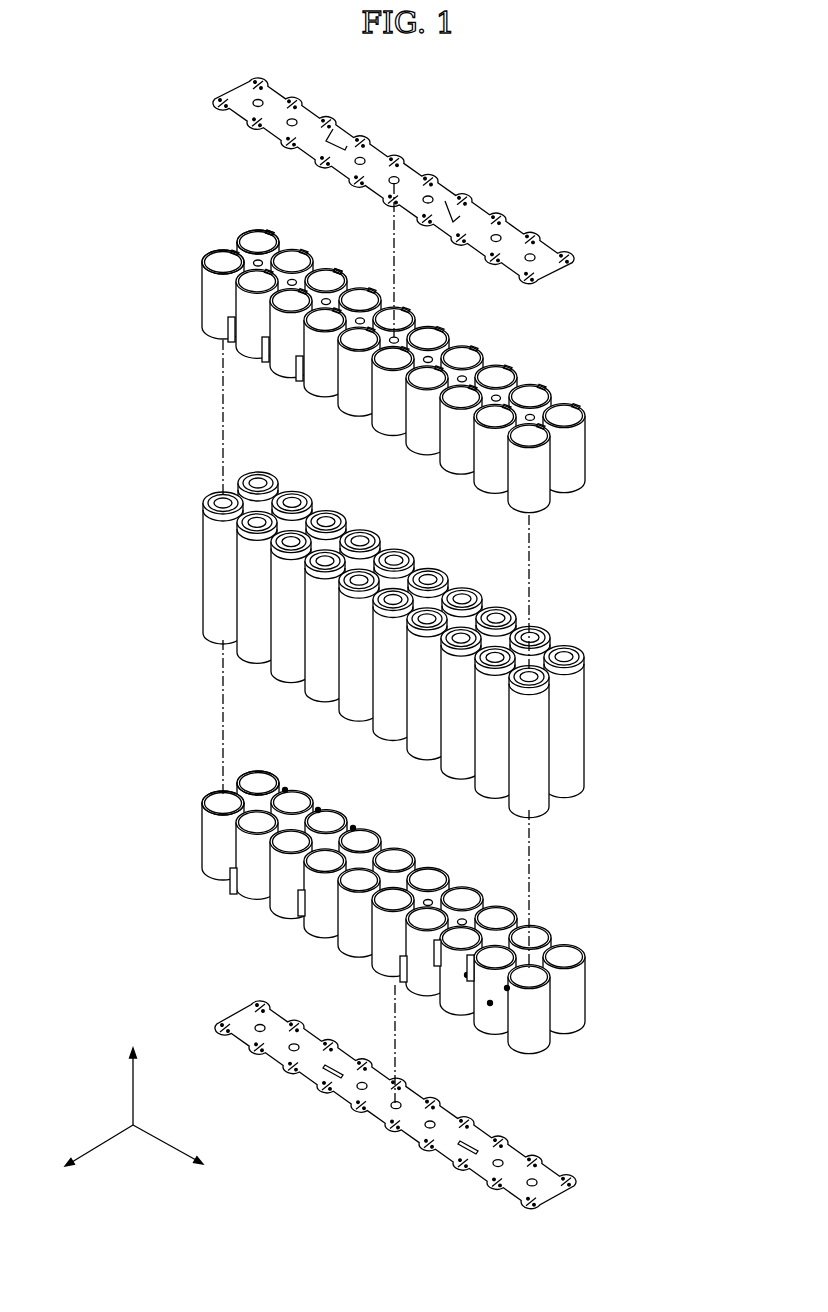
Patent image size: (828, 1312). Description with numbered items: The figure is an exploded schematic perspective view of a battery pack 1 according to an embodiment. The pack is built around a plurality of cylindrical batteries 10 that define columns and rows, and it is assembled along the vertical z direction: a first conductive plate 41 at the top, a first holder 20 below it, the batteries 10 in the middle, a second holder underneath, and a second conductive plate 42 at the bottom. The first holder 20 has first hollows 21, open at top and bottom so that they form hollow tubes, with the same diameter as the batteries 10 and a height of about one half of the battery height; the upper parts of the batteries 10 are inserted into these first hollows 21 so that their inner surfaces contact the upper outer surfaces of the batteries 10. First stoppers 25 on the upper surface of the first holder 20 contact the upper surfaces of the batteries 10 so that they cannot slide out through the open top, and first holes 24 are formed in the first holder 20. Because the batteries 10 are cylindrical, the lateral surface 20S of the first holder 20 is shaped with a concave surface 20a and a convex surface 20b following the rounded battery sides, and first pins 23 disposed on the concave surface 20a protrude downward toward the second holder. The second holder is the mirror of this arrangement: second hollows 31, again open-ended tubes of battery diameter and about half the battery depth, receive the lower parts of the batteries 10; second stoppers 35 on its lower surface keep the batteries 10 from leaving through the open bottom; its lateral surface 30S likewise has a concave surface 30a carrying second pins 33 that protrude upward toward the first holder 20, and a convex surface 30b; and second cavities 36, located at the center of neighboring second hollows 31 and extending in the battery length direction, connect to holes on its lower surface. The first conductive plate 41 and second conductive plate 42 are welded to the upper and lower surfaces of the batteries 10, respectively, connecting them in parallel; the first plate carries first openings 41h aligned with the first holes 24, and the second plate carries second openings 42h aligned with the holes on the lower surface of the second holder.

The battery pack 1 is at (152, 150).
The batteries 10 is at (545, 745).
The first holder 20 is at (451, 373).
The concave surface 20a is at (503, 432).
The convex surface 20b is at (478, 470).
The lateral surface of the first holder 20S is at (417, 497).
The first hollows 21 is at (221, 258).
The first pins 23 is at (232, 342).
The first holes 24 is at (462, 375).
The first stoppers 25 is at (272, 235).
The concave surface 30a is at (268, 842).
The convex surface 30b is at (283, 902).
The lateral surface of the second holder 30S is at (205, 930).
The second hollows 31 is at (233, 790).
The second pins 33 is at (352, 826).
The second stoppers 35 is at (312, 938).
The second cavities 36 is at (463, 918).
The first conductive plate 41 is at (436, 181).
The first openings 41h is at (499, 239).
The second conductive plate 42 is at (439, 1105).
The second openings 42h is at (502, 1163).